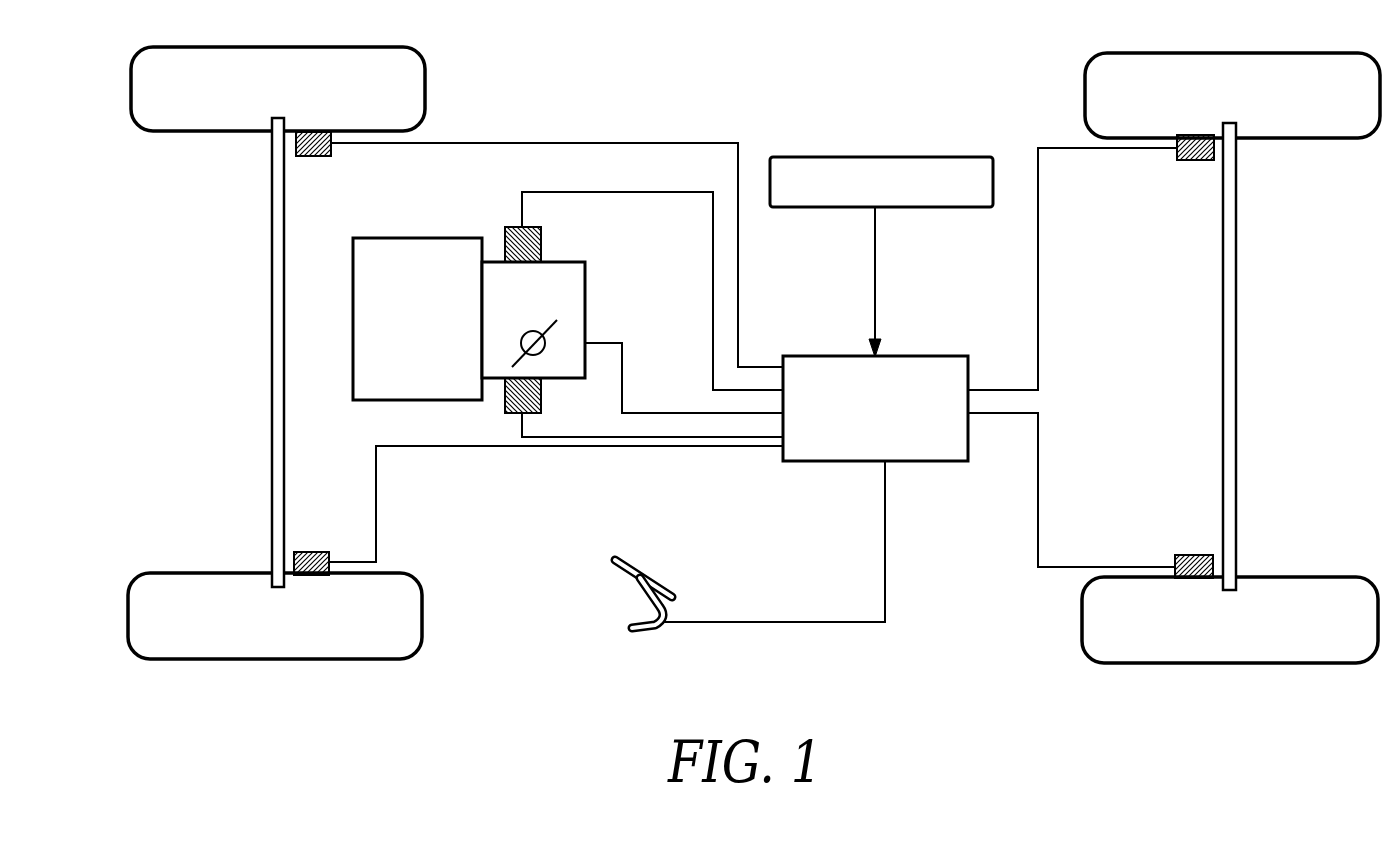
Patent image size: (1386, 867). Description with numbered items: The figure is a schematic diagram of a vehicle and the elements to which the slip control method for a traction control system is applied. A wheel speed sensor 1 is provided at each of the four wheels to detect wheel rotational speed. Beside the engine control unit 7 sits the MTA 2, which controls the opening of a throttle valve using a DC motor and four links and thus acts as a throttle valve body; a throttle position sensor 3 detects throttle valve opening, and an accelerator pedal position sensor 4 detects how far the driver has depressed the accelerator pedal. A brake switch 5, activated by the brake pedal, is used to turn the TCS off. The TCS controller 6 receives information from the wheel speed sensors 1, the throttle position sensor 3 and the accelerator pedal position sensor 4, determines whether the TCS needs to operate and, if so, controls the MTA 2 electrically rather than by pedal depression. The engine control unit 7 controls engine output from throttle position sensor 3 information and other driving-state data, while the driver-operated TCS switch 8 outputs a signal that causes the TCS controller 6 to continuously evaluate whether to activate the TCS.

The wheel speed sensor 1 is at (313, 157).
The MTA 2 is at (585, 307).
The throttle position sensor 3 is at (541, 238).
The accelerator pedal position sensor 4 is at (505, 408).
The brake switch 5 is at (640, 590).
The TCS controller 6 is at (840, 462).
The engine control unit 7 is at (400, 238).
The TCS switch 8 is at (887, 157).